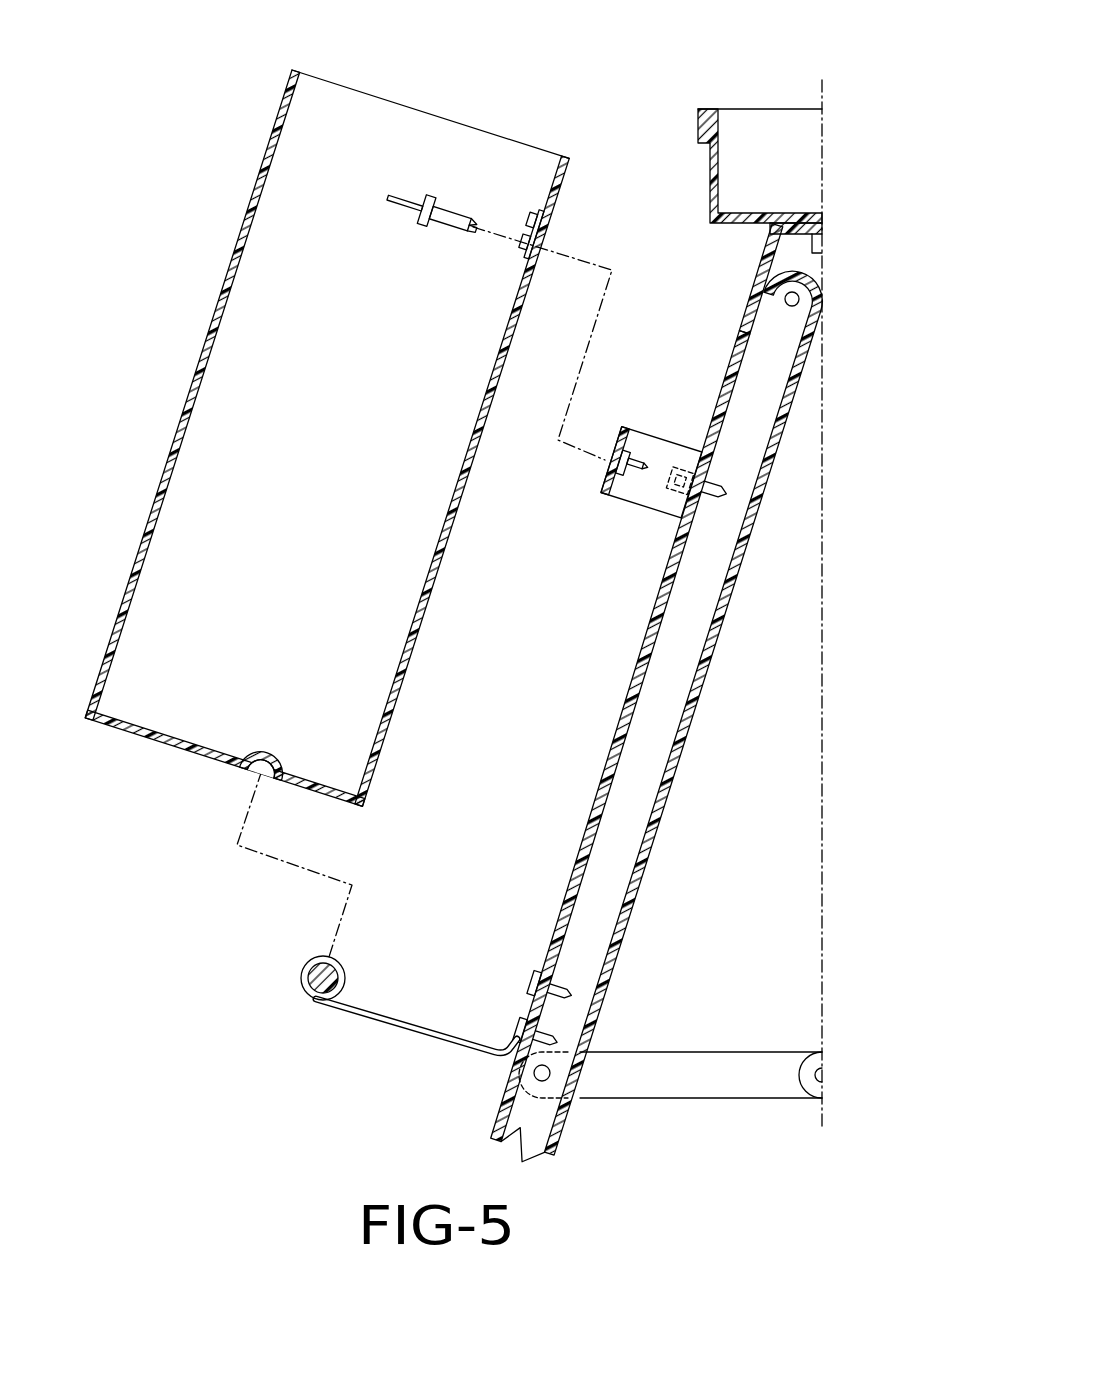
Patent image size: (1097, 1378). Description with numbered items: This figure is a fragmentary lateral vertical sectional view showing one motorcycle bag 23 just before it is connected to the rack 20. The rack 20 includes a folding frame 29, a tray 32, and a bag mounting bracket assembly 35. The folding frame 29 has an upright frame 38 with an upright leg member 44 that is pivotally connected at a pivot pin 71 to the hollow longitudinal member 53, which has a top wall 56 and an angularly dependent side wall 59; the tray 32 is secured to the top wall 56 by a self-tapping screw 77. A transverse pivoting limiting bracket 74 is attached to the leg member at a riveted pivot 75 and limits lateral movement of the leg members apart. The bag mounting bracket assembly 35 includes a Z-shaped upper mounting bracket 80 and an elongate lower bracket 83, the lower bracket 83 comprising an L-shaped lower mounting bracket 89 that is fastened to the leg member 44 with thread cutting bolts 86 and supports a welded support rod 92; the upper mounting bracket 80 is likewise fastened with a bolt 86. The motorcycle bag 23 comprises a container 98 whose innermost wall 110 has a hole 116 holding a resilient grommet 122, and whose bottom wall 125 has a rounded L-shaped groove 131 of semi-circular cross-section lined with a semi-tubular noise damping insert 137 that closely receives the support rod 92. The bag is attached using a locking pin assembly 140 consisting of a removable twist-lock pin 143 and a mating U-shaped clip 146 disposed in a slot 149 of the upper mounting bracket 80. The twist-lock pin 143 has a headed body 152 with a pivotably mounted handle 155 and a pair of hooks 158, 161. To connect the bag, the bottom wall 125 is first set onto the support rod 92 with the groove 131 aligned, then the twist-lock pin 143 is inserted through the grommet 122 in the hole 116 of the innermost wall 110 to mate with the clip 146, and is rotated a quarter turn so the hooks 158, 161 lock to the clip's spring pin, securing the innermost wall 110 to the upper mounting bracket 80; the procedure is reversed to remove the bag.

The rack 20 is at (530, 591).
The motorcycle bag 23 is at (327, 453).
The folding frame 29 is at (651, 696).
The tray 32 is at (762, 118).
The bag mounting bracket assembly 35 is at (347, 1026).
The upright frame 38 is at (588, 812).
The upright leg member 44 is at (612, 722).
The hollow longitudinal member 53 is at (651, 696).
The top wall 56 is at (793, 227).
The side wall 59 is at (760, 262).
The pivot pin 71 is at (786, 296).
The pivoting limiting bracket 74 is at (727, 1050).
The riveted pivot 75 is at (543, 1080).
The self-tapping screw 77 is at (818, 243).
The upper mounting bracket 80 is at (618, 478).
The lower bracket 83 is at (347, 1001).
The thread cutting bolt 86 is at (710, 497).
The L-shaped lower mounting bracket 89 is at (358, 1018).
The support rod 92 is at (318, 966).
The container 98 is at (228, 285).
The innermost wall 110 is at (440, 583).
The hole 116 is at (537, 230).
The resilient grommet 122 is at (531, 259).
The bottom wall 125 is at (148, 745).
The L-shaped groove 131 is at (252, 740).
The noise damping insert 137 is at (272, 780).
The locking pin assembly 140 is at (412, 172).
The twist-lock pin 143 is at (413, 232).
The U-shaped clip 146 is at (630, 456).
The slot 149 is at (603, 467).
The headed body 152 is at (443, 210).
The handle 155 is at (390, 197).
The hook 158 is at (477, 232).
The hook 161 is at (474, 222).